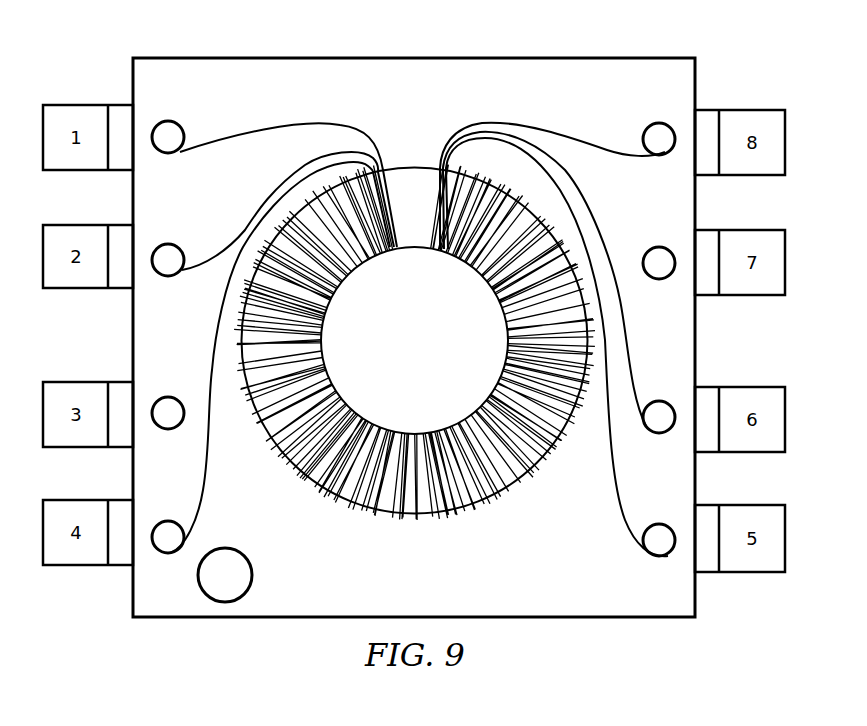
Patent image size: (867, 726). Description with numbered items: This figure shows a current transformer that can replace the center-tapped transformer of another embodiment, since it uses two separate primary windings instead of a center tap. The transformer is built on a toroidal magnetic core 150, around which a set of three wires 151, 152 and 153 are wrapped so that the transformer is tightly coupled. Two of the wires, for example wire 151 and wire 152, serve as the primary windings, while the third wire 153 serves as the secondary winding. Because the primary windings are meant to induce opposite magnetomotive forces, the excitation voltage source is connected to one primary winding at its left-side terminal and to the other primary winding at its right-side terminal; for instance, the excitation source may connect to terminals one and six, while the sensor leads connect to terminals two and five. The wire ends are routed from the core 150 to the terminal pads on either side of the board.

The toroidal magnetic core 150 is at (413, 165).
The wire 151 is at (268, 130).
The wire 152 is at (257, 197).
The wire 153 is at (204, 492).